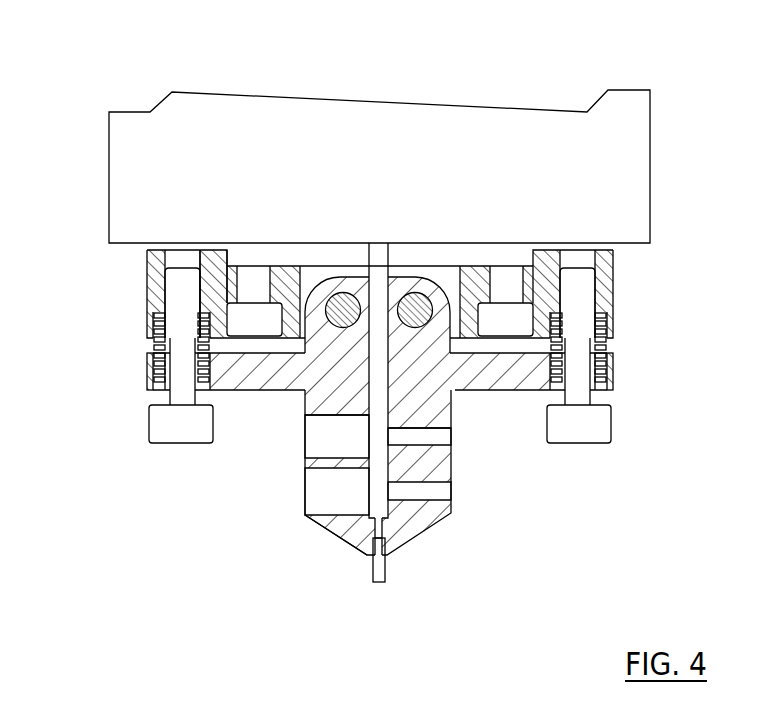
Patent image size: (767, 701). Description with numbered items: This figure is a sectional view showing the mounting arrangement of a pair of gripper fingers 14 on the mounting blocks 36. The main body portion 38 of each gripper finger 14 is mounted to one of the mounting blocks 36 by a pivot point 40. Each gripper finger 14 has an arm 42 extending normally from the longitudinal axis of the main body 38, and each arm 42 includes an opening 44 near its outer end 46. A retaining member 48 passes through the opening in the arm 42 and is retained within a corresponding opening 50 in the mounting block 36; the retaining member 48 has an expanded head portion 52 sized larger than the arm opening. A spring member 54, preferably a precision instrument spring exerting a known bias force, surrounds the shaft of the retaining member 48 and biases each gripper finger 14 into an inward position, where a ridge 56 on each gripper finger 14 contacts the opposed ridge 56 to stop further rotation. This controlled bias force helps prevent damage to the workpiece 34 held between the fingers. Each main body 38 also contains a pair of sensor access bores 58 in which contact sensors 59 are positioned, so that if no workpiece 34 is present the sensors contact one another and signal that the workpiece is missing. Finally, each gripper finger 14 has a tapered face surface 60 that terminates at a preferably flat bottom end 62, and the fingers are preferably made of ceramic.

The gripper finger 14 is at (322, 557).
The workpiece 34 is at (382, 583).
The mounting block 36 is at (146, 286).
The main body portion 38 is at (330, 384).
The pivot point 40 is at (350, 293).
The arm 42 is at (242, 392).
The opening 44 is at (146, 389).
The outer end 46 is at (146, 358).
The retaining member 48 is at (177, 295).
The opening 50 is at (203, 272).
The expanded head portion 52 is at (180, 447).
The spring member 54 is at (608, 343).
The ridge 56 is at (371, 552).
The sensor access bore 58 is at (334, 510).
The contact sensor 59 is at (340, 437).
The tapered face surface 60 is at (347, 545).
The bottom end 62 is at (386, 532).